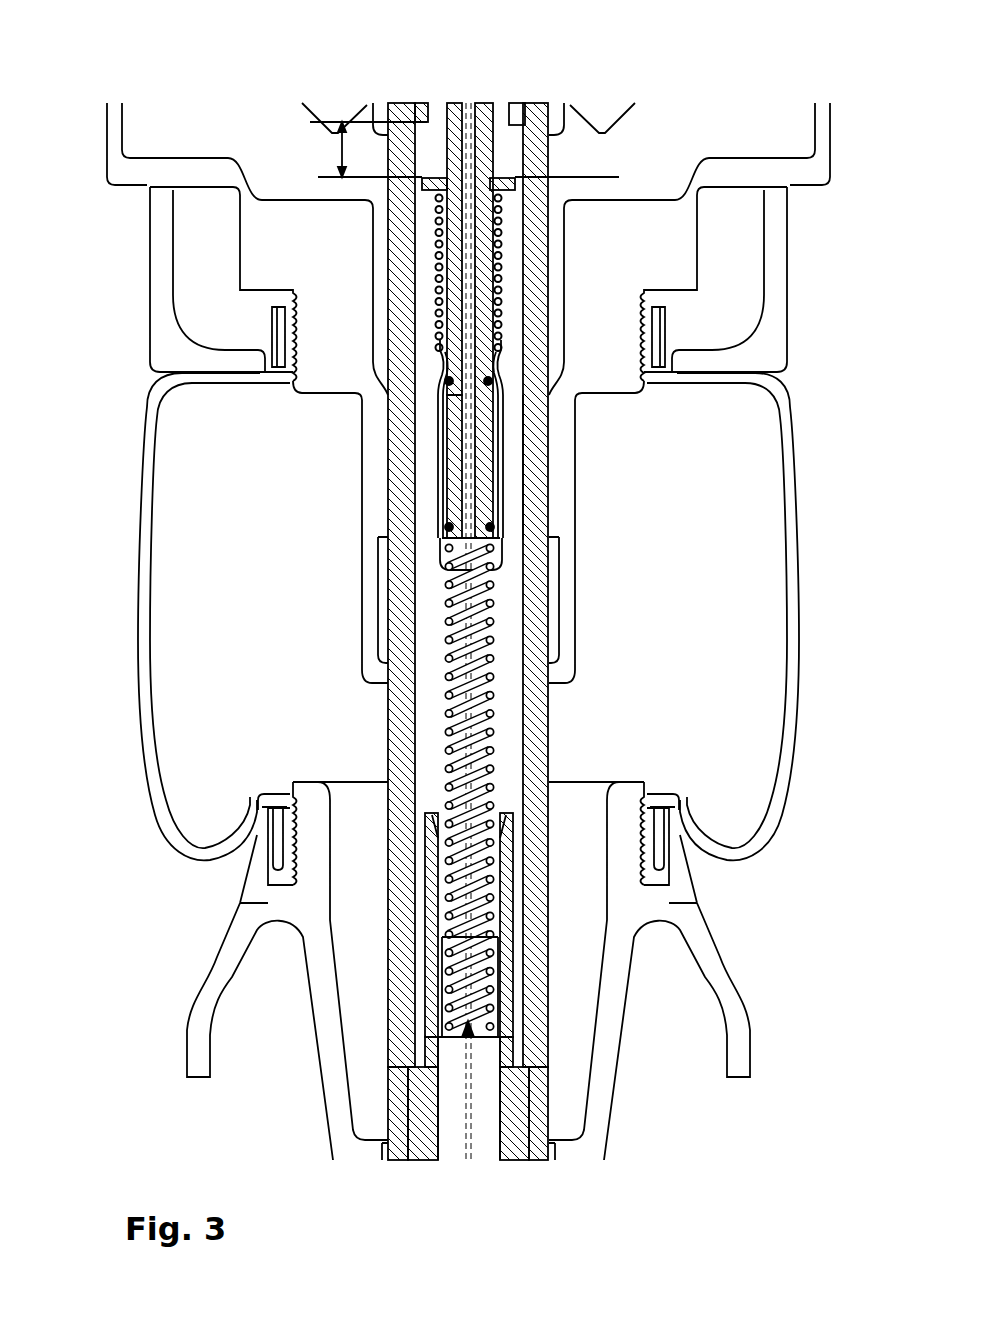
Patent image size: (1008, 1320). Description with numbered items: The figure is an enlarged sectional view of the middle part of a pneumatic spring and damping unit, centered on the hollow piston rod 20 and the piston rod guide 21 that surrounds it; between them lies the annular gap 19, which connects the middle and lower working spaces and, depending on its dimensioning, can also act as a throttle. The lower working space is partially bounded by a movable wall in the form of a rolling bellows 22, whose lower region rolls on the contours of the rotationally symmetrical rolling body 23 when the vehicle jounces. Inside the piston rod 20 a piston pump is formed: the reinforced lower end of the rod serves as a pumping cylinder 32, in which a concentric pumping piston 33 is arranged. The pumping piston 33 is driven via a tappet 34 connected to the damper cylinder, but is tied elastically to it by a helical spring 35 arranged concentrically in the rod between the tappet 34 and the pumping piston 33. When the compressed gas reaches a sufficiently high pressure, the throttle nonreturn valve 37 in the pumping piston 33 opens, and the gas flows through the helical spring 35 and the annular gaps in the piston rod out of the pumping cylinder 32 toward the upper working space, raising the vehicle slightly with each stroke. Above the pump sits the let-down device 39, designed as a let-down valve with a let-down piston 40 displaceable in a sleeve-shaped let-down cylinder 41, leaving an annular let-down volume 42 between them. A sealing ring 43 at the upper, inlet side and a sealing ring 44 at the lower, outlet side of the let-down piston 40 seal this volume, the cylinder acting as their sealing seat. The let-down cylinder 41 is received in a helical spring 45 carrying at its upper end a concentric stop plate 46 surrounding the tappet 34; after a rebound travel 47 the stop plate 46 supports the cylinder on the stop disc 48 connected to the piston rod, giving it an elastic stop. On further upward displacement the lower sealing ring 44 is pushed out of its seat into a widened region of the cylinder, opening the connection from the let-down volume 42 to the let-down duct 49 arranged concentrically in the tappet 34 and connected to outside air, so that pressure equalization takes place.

The annular gap 19 is at (558, 325).
The hollow piston rod 20 is at (400, 290).
The piston rod guide 21 is at (367, 372).
The rolling bellows 22 is at (157, 793).
The rolling body 23 is at (215, 995).
The pumping cylinder 32 is at (471, 1097).
The pumping piston 33 is at (487, 1025).
The tappet 34 is at (455, 232).
The helical spring 35 is at (470, 720).
The throttle nonreturn valve 37 is at (476, 1044).
The let-down device 39 is at (520, 443).
The let-down piston 40 is at (452, 488).
The let-down cylinder 41 is at (437, 393).
The let-down volume 42 is at (443, 408).
The sealing ring 43 is at (512, 377).
The sealing ring 44 is at (503, 525).
The helical spring 45 is at (497, 278).
The stop plate 46 is at (520, 178).
The rebound travel 47 is at (342, 150).
The stop disc 48 is at (517, 115).
The let-down duct 49 is at (470, 267).